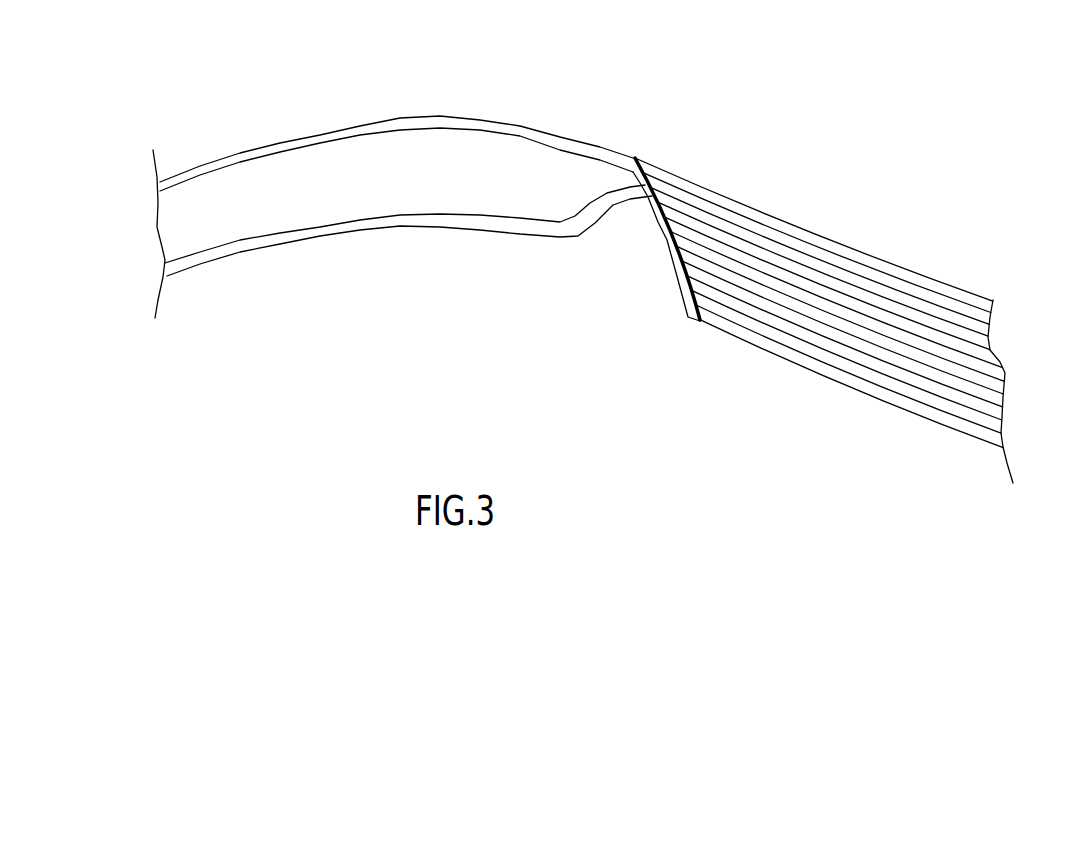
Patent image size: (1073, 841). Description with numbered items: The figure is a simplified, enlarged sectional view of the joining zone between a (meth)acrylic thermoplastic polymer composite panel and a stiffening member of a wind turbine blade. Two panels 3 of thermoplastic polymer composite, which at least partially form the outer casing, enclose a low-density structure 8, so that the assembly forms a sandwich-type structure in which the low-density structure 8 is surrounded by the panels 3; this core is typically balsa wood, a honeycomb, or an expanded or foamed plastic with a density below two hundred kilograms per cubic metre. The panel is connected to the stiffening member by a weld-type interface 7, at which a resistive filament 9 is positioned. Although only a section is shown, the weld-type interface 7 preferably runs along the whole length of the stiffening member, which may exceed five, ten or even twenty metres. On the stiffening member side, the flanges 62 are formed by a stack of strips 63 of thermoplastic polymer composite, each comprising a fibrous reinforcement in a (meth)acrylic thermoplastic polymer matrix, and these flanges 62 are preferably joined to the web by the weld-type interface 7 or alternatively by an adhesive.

The panel of thermoplastic polymer composite 3 is at (393, 196).
The low-density structure 8 is at (408, 174).
The resistive filament 9 is at (645, 150).
The weld-type interface 7 is at (666, 205).
The strip 63 is at (819, 290).
The flange 62 is at (948, 242).